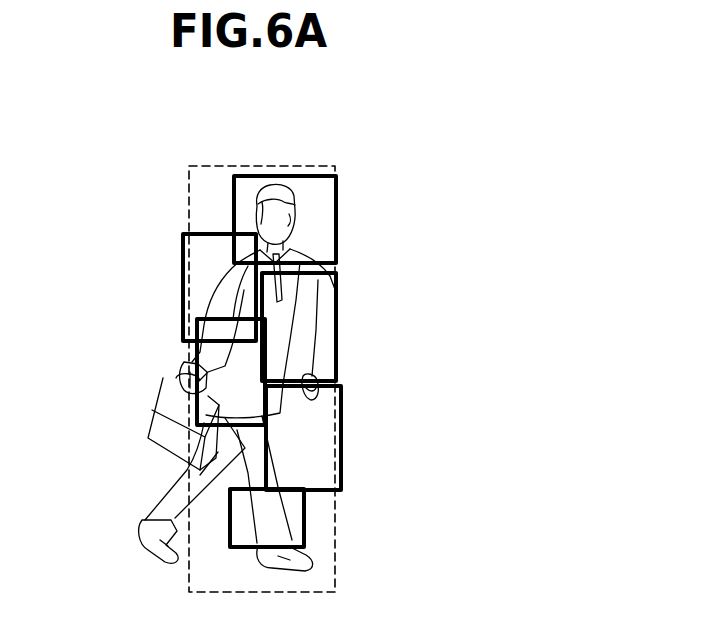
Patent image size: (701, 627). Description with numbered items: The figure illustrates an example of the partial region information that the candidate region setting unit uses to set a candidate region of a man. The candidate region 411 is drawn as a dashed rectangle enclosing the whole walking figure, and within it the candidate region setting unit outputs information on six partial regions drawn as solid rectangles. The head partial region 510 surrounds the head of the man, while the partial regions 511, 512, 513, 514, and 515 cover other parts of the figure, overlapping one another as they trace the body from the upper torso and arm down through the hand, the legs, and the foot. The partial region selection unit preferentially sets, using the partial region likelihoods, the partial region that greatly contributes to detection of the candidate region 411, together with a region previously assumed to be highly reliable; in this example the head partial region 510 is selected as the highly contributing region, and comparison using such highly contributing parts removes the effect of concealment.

The candidate region 411 is at (207, 165).
The head partial region 510 is at (316, 175).
The partial region 511 is at (183, 262).
The partial region 512 is at (336, 302).
The partial region 513 is at (190, 360).
The partial region 514 is at (341, 438).
The partial region 515 is at (305, 518).